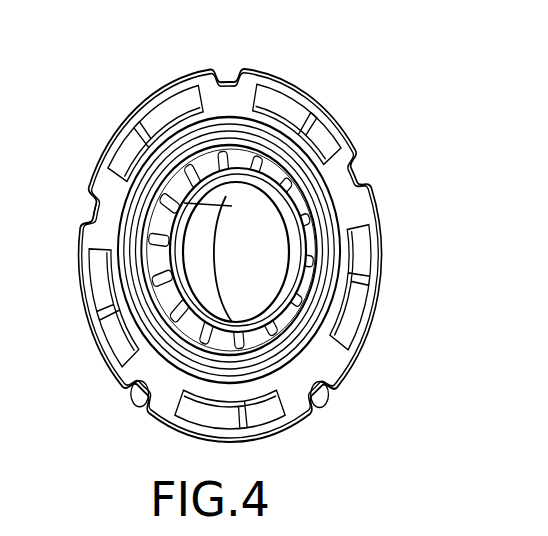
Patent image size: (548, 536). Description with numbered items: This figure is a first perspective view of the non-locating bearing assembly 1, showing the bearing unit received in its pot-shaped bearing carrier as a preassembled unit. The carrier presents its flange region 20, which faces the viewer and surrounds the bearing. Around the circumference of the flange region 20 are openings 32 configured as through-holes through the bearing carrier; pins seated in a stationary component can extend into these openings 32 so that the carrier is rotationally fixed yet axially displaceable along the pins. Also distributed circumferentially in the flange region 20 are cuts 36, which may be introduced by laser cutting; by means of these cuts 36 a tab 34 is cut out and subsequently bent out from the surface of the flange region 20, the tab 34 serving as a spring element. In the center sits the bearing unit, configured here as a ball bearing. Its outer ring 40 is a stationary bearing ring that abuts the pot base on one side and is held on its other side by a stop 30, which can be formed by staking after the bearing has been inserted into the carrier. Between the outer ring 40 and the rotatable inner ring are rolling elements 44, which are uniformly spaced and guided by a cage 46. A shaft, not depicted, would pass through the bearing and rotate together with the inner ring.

The non-locating bearing assembly 1 is at (250, 33).
The flange region 20 is at (358, 164).
The stop 30 is at (160, 348).
The openings 32 is at (229, 80).
The tab 34 is at (307, 118).
The cuts 36 is at (278, 83).
The outer ring 40 is at (147, 388).
The rolling elements 44 is at (306, 411).
The cage 46 is at (278, 338).